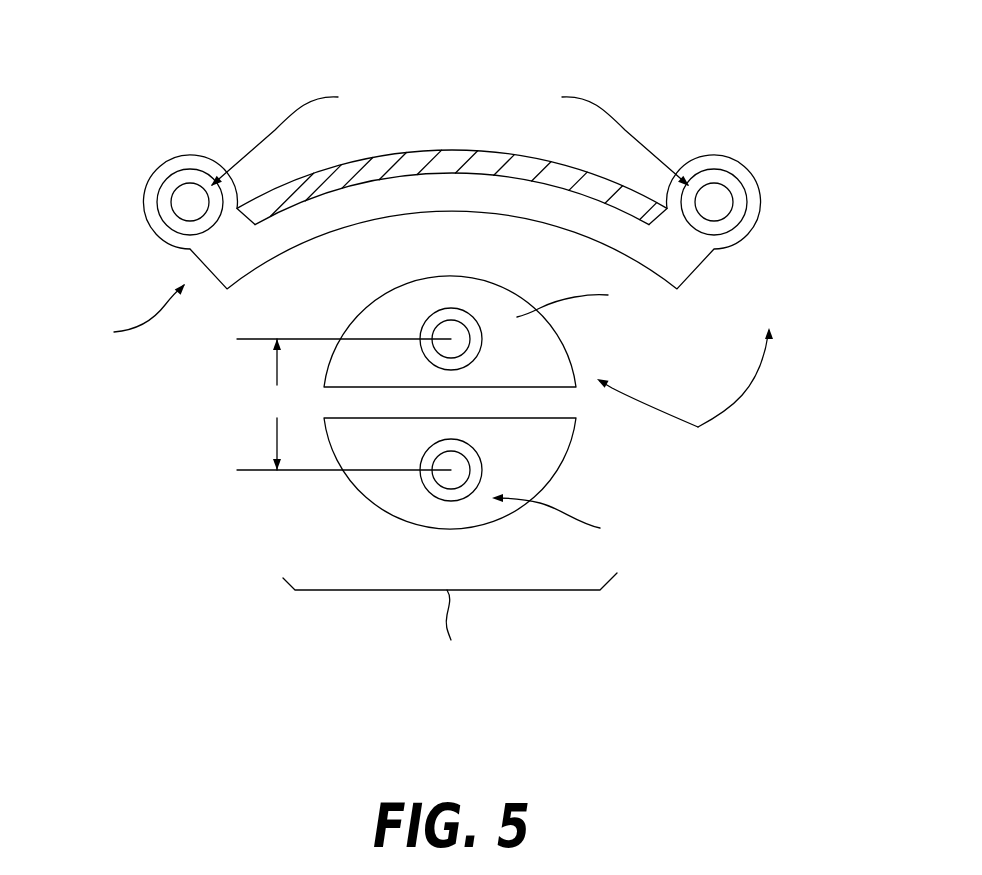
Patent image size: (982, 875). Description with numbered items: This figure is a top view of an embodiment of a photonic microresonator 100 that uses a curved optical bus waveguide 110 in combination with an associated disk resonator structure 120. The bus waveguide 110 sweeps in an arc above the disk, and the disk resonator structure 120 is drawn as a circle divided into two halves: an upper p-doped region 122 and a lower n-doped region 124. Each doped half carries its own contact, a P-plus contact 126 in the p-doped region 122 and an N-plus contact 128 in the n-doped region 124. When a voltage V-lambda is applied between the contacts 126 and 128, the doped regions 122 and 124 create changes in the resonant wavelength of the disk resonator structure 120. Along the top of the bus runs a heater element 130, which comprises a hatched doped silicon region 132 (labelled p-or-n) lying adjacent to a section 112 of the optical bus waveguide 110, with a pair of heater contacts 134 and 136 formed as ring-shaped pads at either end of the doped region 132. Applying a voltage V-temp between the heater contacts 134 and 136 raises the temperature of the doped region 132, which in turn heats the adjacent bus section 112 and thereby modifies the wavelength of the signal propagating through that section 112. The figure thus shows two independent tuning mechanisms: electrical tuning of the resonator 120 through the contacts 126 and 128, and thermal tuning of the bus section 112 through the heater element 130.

The photonic microresonator 100 is at (433, 197).
The optical bus waveguide 110 is at (190, 320).
The section of optical bus waveguide 112 is at (334, 219).
The disk resonator structure 120 is at (488, 459).
The p-doped region 122 is at (365, 332).
The n-doped region 124 is at (372, 487).
The contact 126 is at (463, 323).
The contact 128 is at (433, 487).
The heater element 130 is at (532, 75).
The doped silicon region 132 is at (410, 165).
The heater contact 134 is at (166, 202).
The heater contact 136 is at (724, 185).